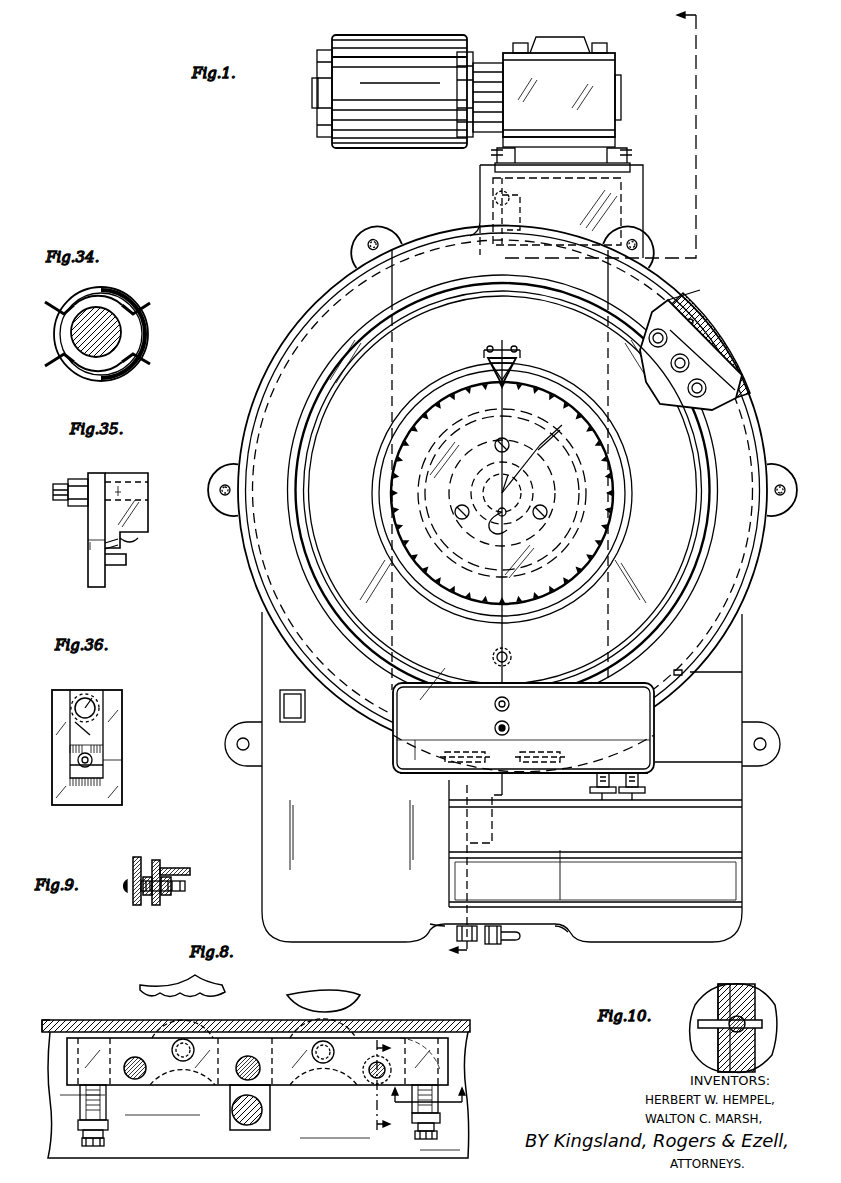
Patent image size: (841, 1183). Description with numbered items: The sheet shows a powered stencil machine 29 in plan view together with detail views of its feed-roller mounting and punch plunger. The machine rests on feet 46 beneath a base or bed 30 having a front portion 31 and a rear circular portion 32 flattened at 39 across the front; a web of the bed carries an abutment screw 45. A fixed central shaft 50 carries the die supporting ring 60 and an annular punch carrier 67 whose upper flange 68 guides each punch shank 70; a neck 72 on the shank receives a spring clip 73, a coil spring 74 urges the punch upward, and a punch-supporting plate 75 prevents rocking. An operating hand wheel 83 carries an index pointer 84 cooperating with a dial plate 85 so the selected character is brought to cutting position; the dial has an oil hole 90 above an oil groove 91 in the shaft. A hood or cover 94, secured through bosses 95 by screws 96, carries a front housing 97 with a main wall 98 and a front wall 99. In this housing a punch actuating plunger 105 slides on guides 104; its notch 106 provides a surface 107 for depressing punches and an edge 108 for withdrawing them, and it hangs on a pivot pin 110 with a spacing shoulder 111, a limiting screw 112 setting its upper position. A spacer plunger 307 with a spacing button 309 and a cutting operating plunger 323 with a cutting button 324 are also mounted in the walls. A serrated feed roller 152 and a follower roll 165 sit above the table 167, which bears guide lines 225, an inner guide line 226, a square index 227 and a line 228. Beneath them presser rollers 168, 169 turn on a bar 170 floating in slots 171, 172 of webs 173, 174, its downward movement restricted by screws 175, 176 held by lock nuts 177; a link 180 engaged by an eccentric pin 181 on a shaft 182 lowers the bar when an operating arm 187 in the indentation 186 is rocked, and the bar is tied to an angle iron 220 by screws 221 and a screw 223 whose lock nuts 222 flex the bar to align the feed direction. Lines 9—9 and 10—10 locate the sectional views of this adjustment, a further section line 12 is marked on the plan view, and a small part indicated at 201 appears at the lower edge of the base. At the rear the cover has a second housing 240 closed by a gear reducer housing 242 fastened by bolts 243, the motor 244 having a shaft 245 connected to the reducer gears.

In FIG. 1, the section line 12 is at (586, 486).
In FIG. 1, the machine 29 is at (322, 262).
In FIG. 1, the base or bed 30 is at (730, 683).
In FIG. 1, the front portion 31 is at (265, 818).
In FIG. 10, the rear circular portion 32 is at (765, 1052).
In FIG. 8, the flattened part of ring 39 is at (472, 1095).
In FIG. 1, the abutment screw 45 is at (508, 654).
In FIG. 1, the feet 46 is at (480, 196).
In FIG. 1, the central shaft 50 is at (600, 480).
In FIG. 1, the die supporting ring 60 is at (432, 497).
In FIG. 1, the annular punch carrier 67 is at (662, 398).
In FIG. 1, the upper flange 68 is at (718, 332).
In FIG. 1, the punch shank 70 is at (688, 388).
In FIG. 34, the punch shank 70 is at (90, 310).
In FIG. 34, the neck 72 is at (125, 338).
In FIG. 34, the spring clip 73 is at (145, 320).
In FIG. 34, the coil spring 74 is at (120, 372).
In FIG. 1, the punch-supporting plate 75 is at (705, 317).
In FIG. 1, the operating hand wheel 83 is at (735, 535).
In FIG. 1, the index pointer 84 is at (518, 352).
In FIG. 1, the dial plate 85 is at (580, 470).
In FIG. 1, the oil hole 90 is at (507, 518).
In FIG. 1, the oil groove 91 is at (530, 478).
In FIG. 1, the hood or cover 94 is at (318, 350).
In FIG. 1, the bosses 95 is at (372, 234).
In FIG. 1, the screws 96 is at (362, 236).
In FIG. 1, the housing 97 is at (420, 705).
In FIG. 1, the main wall 98 is at (540, 692).
In FIG. 1, the front wall 99 is at (412, 778).
In FIG. 35, the guides 104 is at (92, 578).
In FIG. 36, the guides 104 is at (115, 700).
In FIG. 35, the punch actuating plunger 105 is at (145, 560).
In FIG. 36, the punch actuating plunger 105 is at (130, 752).
In FIG. 35, the notch 106 is at (136, 546).
In FIG. 36, the notch 106 is at (72, 762).
In FIG. 35, the surface 107 is at (136, 540).
In FIG. 36, the surface 107 is at (98, 745).
In FIG. 35, the edge 108 is at (128, 566).
In FIG. 36, the edge 108 is at (98, 766).
In FIG. 35, the pivot pin 110 is at (72, 480).
In FIG. 36, the pivot pin 110 is at (88, 700).
In FIG. 35, the spacing shoulder 111 is at (66, 500).
In FIG. 36, the spacing shoulder 111 is at (95, 708).
In FIG. 1, the limiting screw 112 is at (509, 727).
In FIG. 1, the serrated feed roller 152 is at (465, 750).
In FIG. 8, the serrated feed roller 152 is at (142, 986).
In FIG. 1, the second follower roll 165 is at (555, 750).
In FIG. 8, the second follower roll 165 is at (345, 992).
In FIG. 1, the table 167 is at (720, 878).
In FIG. 8, the table 167 is at (450, 1020).
In FIG. 8, the presser roller 168 is at (183, 1085).
In FIG. 8, the presser roller 169 is at (330, 1085).
In FIG. 9, the bar 170 is at (142, 860).
In FIG. 8, the bar 170 is at (122, 1045).
In FIG. 8, the slot 171 is at (80, 1095).
In FIG. 10, the slot 171 is at (700, 1027).
In FIG. 8, the slot 172 is at (440, 1085).
In FIG. 10, the slot 172 is at (727, 985).
In FIG. 8, the web 173 is at (430, 1034).
In FIG. 10, the web 173 is at (750, 993).
In FIG. 8, the web 174 is at (92, 1022).
In FIG. 8, the screw 175 is at (102, 1135).
In FIG. 8, the screw 176 is at (416, 1130).
In FIG. 10, the screw 176 is at (745, 1030).
In FIG. 8, the lock nuts 177 is at (108, 1123).
In FIG. 8, the link 180 is at (262, 1096).
In FIG. 8, the pin 181 is at (272, 1115).
In FIG. 1, the shaft 182 is at (503, 942).
In FIG. 8, the shaft 182 is at (232, 1110).
In FIG. 1, the indentation 186 is at (550, 934).
In FIG. 1, the operating arm 187 is at (518, 938).
In FIG. 1, the fitting 201 is at (455, 933).
In FIG. 9, the angle iron 220 is at (188, 866).
In FIG. 8, the screw 221 is at (148, 1068).
In FIG. 9, the lock nuts 222 is at (168, 893).
In FIG. 9, the screw 223 is at (188, 888).
In FIG. 8, the screw 223 is at (368, 1072).
In FIG. 1, the guide lines 225 is at (734, 800).
In FIG. 1, the inner guide line 226 is at (728, 672).
In FIG. 1, the square index 227 is at (292, 724).
In FIG. 1, the line 228 is at (448, 876).
In FIG. 1, the second housing 240 is at (618, 198).
In FIG. 1, the gear reducer housing 242 is at (600, 78).
In FIG. 1, the bolts 243 is at (496, 153).
In FIG. 1, the motor 244 is at (392, 140).
In FIG. 1, the shaft 245 is at (622, 100).
In FIG. 1, the spacer plunger 307 is at (592, 787).
In FIG. 1, the spacing operation button 309 is at (599, 795).
In FIG. 1, the cutting operating plunger 323 is at (647, 789).
In FIG. 1, the cutting operation button 324 is at (633, 797).
In FIG. 8, the section line 9— 9 is at (374, 1087).
In FIG. 8, the section line 10— 10 is at (430, 1105).